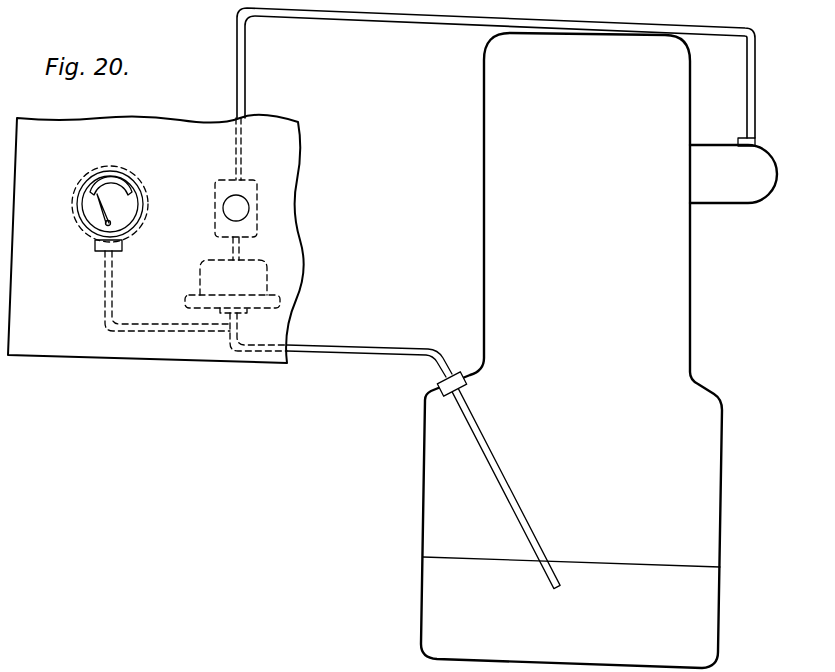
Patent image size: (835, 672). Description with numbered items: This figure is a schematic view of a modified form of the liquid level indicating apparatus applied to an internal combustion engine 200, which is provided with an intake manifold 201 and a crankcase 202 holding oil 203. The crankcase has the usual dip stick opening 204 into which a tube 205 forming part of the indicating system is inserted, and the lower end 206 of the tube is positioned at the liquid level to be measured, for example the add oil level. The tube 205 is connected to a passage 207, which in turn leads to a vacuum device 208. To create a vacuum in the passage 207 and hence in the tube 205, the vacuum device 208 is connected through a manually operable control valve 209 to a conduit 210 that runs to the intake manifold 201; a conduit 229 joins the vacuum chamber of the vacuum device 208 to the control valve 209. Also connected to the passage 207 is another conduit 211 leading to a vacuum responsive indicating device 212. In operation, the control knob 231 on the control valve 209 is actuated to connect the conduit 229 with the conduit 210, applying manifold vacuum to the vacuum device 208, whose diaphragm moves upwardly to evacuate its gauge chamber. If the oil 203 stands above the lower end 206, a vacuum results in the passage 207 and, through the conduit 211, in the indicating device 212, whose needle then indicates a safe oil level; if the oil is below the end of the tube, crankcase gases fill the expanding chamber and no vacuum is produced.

The internal combustion engine 200 is at (463, 237).
The intake manifold 201 is at (731, 205).
The crankcase 202 is at (693, 523).
The oil 203 is at (693, 605).
The dip stick opening 204 is at (447, 392).
The tube 205 is at (487, 448).
The lower end of the tube 206 is at (565, 587).
The passage 207 is at (358, 347).
The vacuum device 208 is at (278, 279).
The control valve 209 is at (268, 193).
The conduit 210 is at (435, 24).
The conduit 211 is at (156, 331).
The vacuum responsive indicating device 212 is at (136, 167).
The conduit 229 is at (230, 247).
The control knob 231 is at (240, 210).